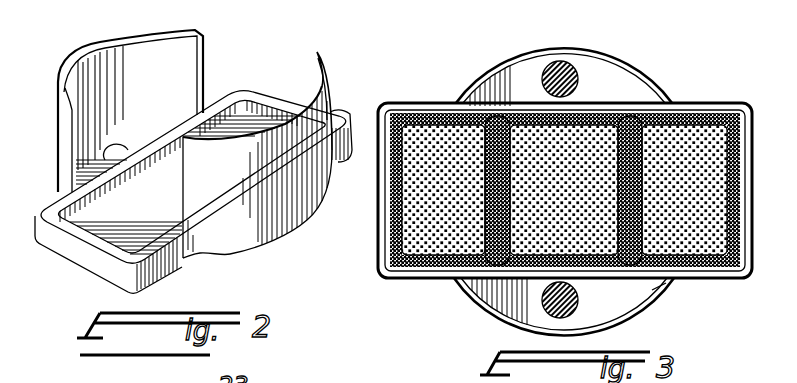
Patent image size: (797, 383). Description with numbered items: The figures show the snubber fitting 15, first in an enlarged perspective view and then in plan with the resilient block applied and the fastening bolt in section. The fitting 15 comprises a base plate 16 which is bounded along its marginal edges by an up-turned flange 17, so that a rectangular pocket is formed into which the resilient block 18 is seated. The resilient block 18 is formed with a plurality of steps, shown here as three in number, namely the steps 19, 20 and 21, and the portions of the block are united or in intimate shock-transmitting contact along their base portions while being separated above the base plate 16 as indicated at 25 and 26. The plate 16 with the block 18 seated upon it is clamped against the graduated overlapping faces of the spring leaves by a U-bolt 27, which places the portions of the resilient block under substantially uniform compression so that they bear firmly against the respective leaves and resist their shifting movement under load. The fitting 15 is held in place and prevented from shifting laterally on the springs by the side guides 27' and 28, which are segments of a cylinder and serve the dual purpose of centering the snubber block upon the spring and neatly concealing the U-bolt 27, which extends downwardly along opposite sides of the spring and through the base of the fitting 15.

In FIG. 2, the fitting 15 is at (337, 111).
In FIG. 2, the base plate 16 is at (72, 248).
In FIG. 2, the up-turned flange 17 is at (165, 248).
In FIG. 3, the up-turned flange 17 is at (385, 260).
In FIG. 3, the resilient block 18 is at (423, 222).
In FIG. 3, the step 19 is at (418, 137).
In FIG. 3, the step 20 is at (580, 140).
In FIG. 3, the step 21 is at (688, 133).
In FIG. 3, the separation 25 is at (495, 123).
In FIG. 3, the separation 26 is at (627, 137).
In FIG. 3, the U-bolt 27 is at (538, 181).
In FIG. 2, the side guide 27' is at (130, 97).
In FIG. 3, the side guide 27' is at (564, 167).
In FIG. 2, the side guide 28 is at (323, 80).
In FIG. 3, the side guide 28 is at (660, 289).